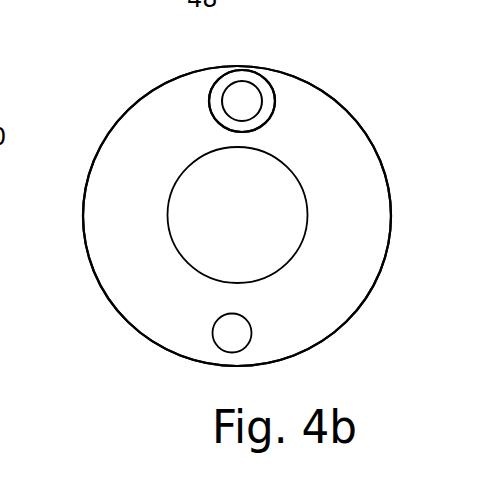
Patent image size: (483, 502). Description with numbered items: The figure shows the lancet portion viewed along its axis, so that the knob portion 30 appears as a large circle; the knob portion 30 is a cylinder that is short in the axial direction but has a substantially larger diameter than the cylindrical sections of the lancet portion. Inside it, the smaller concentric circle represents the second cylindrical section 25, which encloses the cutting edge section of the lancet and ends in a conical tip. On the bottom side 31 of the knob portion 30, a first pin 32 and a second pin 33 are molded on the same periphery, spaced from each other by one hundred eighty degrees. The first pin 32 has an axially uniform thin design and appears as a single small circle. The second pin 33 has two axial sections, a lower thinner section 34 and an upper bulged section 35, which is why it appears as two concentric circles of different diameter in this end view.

The second cylindrical section 25 is at (197, 245).
The knob portion 30 is at (337, 155).
The bottom side 31 is at (350, 247).
The first pin 32 is at (225, 333).
The second pin 33 is at (280, 89).
The lower thinner section 34 is at (235, 100).
The upper bulged section 35 is at (253, 73).